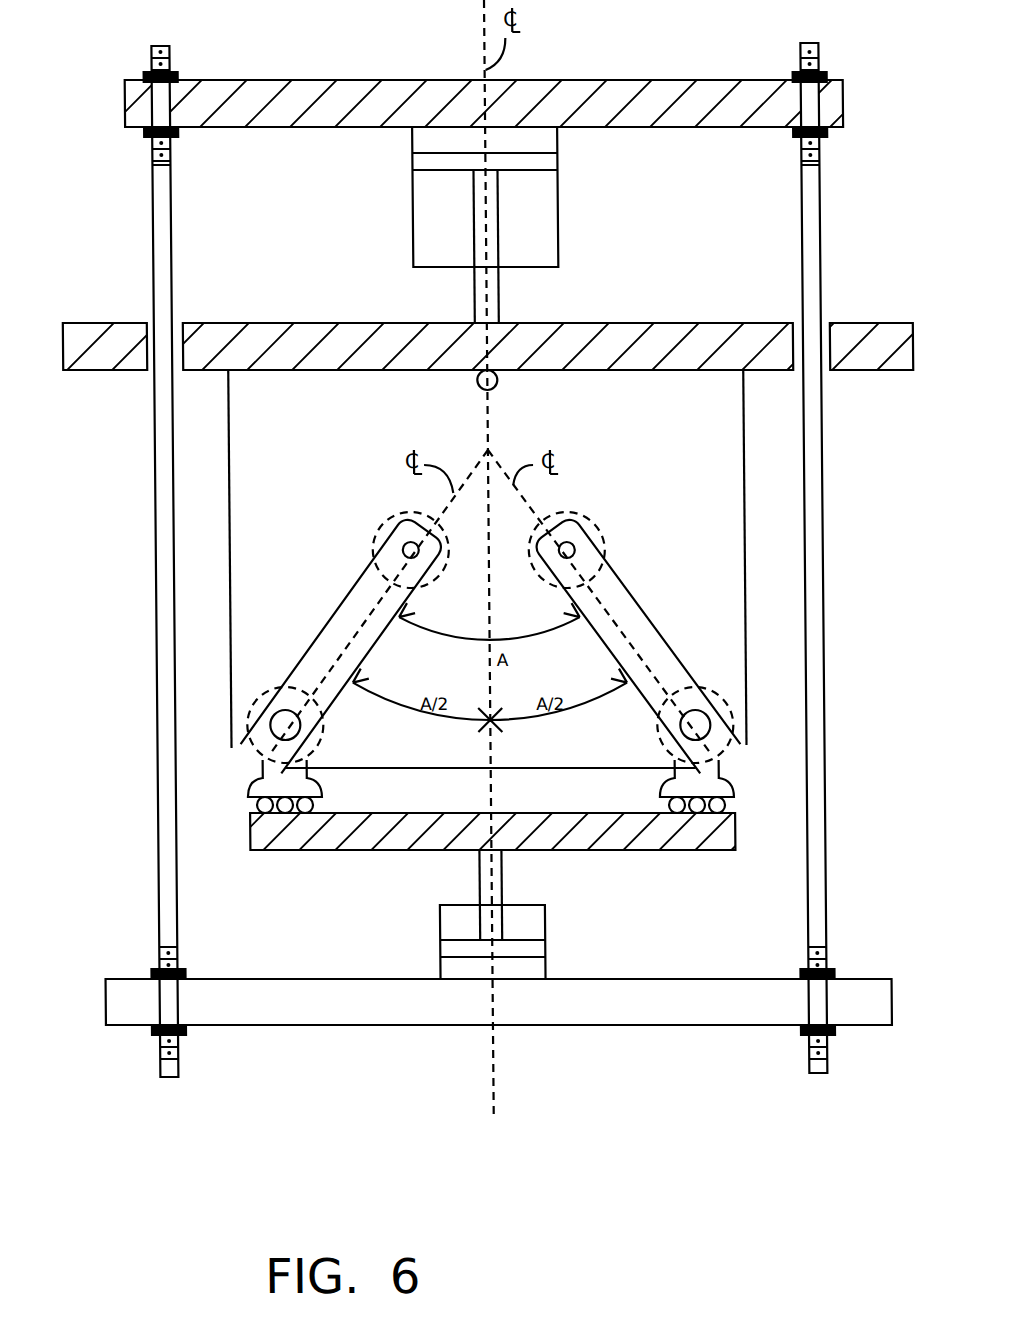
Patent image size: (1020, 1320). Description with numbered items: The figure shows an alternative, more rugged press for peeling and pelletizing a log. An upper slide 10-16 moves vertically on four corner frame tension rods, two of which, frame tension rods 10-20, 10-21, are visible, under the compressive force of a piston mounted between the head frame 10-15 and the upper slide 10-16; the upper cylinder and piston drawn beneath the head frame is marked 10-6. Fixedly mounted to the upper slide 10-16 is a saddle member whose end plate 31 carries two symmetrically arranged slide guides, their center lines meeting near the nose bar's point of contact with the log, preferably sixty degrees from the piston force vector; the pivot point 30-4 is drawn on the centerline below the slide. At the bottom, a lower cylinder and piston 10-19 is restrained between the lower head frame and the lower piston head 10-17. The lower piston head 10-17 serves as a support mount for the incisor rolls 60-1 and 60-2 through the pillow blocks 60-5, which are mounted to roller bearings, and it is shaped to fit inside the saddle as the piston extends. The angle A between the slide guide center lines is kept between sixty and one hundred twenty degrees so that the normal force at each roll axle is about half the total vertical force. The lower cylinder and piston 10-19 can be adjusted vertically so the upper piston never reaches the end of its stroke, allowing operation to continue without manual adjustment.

The head frame 10-15 is at (705, 80).
The upper slide 10-16 is at (734, 320).
The lower piston head 10-17 is at (695, 852).
The upper cylinder 10-6 is at (556, 210).
The lower cylinder and piston 10-19 is at (537, 913).
The frame tension rod 10-20 is at (818, 203).
The frame tension rod 10-21 is at (150, 238).
The pivot pin 30-4 is at (495, 380).
The end plate 31 is at (752, 495).
The incisor roll 60-1 is at (657, 747).
The incisor roll 60-2 is at (309, 748).
The pillow block 60-5 is at (319, 795).